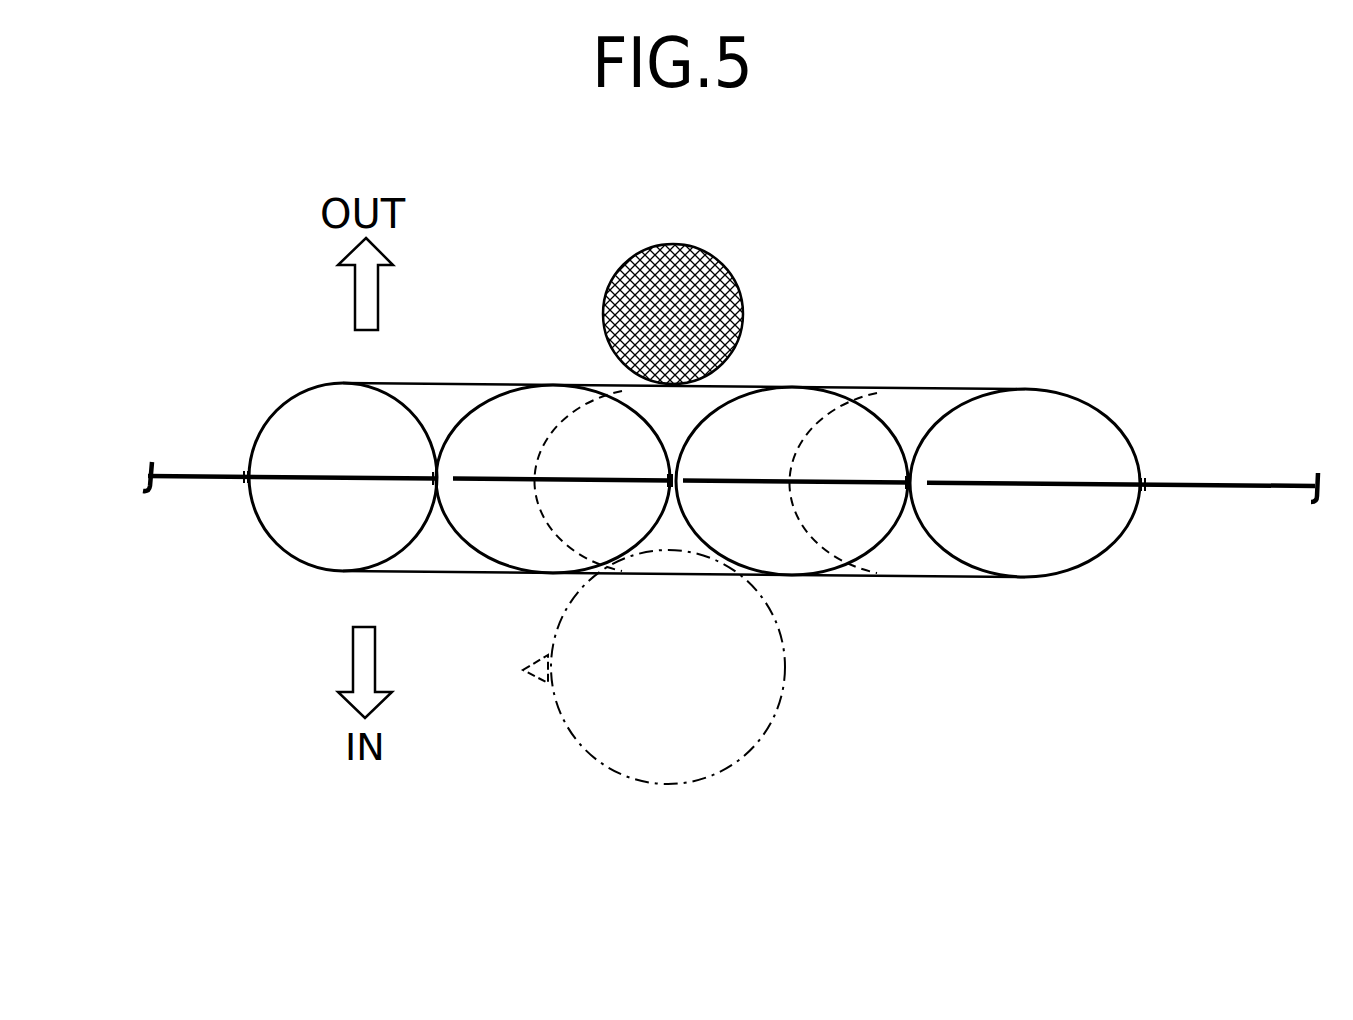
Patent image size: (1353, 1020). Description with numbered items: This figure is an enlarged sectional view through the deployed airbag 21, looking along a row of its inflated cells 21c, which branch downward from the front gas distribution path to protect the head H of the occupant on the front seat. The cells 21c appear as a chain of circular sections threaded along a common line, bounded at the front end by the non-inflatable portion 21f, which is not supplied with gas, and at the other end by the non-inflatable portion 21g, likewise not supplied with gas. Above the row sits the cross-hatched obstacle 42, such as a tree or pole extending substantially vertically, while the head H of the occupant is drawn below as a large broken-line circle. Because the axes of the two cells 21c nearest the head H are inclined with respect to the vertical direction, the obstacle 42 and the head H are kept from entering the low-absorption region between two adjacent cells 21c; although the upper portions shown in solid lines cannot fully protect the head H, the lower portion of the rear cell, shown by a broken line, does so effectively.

The airbag 21 is at (705, 535).
The cells 21c is at (316, 418).
The non-inflatable portion 21f is at (196, 473).
The non-inflatable portion 21g is at (1222, 485).
The obstacle 42 is at (700, 267).
The head H is at (728, 742).